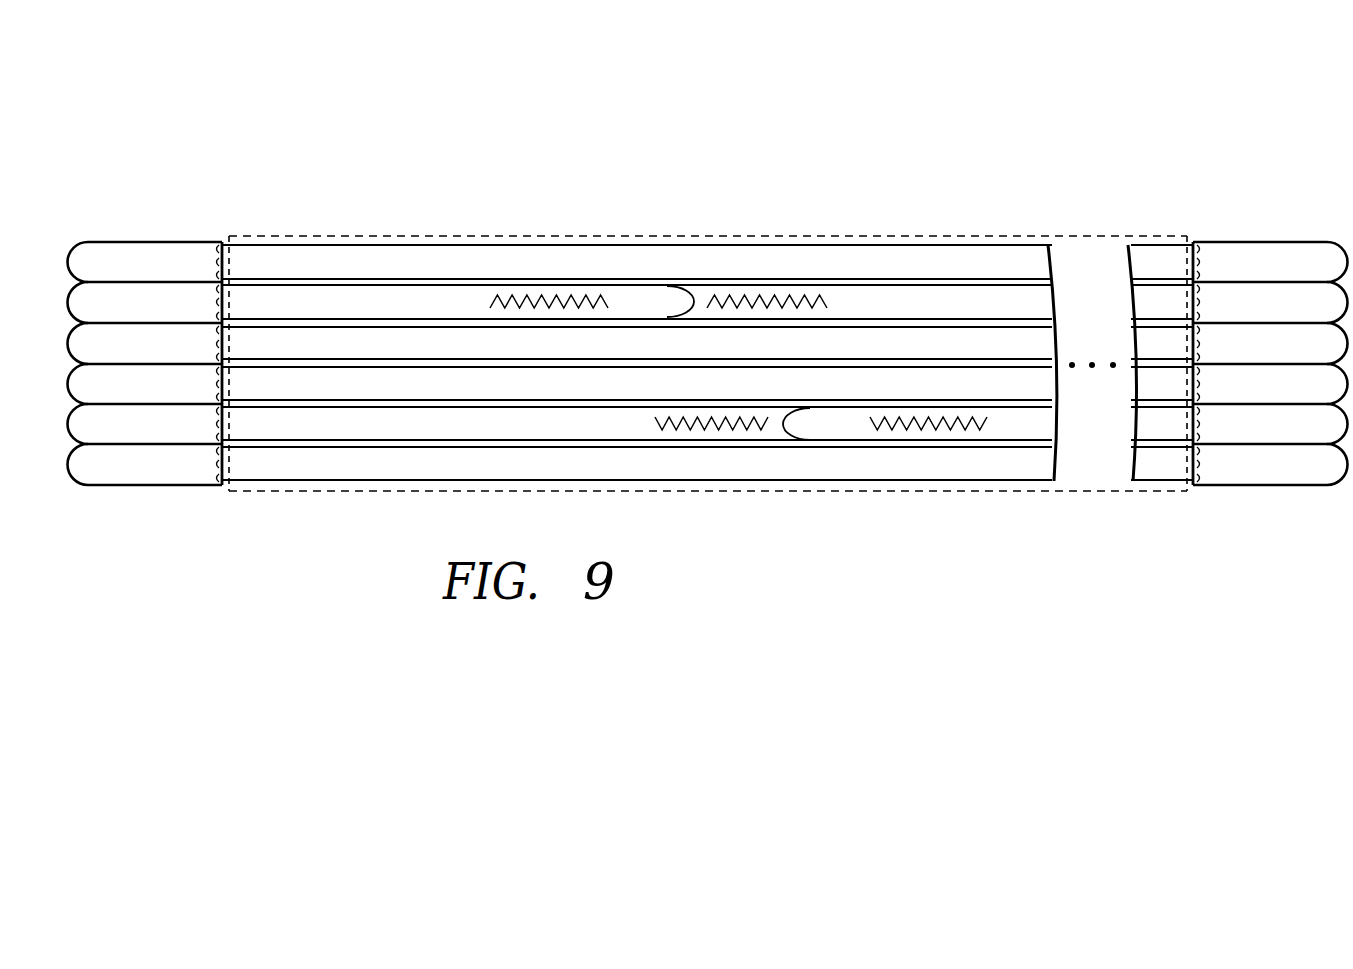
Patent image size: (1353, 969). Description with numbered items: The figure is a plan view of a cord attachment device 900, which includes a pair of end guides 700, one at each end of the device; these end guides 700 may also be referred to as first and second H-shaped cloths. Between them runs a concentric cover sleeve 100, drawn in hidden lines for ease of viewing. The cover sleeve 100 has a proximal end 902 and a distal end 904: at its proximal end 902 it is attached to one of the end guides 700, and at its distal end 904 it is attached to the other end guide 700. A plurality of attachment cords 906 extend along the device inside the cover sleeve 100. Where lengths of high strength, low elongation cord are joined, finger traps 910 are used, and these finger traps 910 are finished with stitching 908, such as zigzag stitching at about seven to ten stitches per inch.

The cord attachment device 900 is at (378, 210).
The concentric cover sleeve 100 is at (501, 237).
The distal end 904 is at (232, 237).
The proximal end 902 is at (1186, 237).
The end guide 700 is at (117, 257).
The attachment cords 906 is at (345, 502).
The stitching 908 is at (677, 433).
The finger trap 910 is at (780, 433).